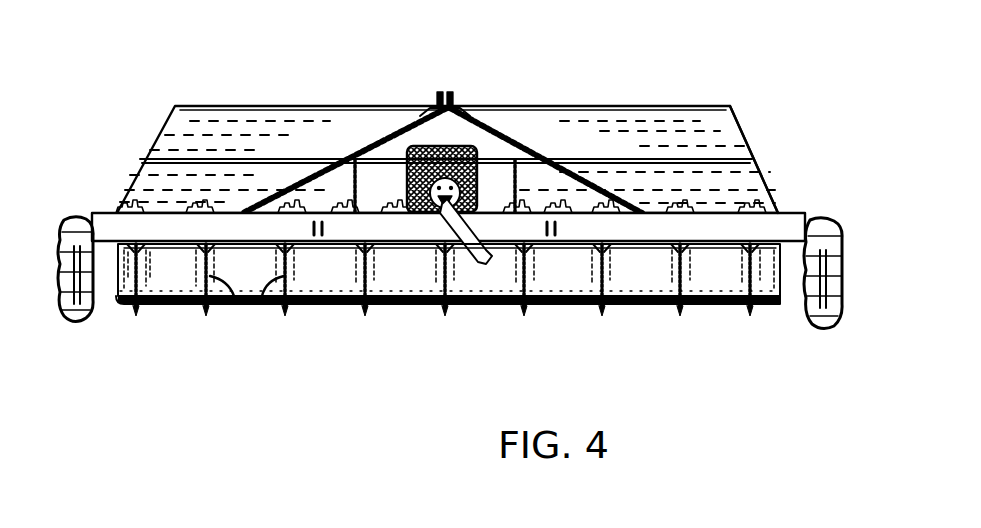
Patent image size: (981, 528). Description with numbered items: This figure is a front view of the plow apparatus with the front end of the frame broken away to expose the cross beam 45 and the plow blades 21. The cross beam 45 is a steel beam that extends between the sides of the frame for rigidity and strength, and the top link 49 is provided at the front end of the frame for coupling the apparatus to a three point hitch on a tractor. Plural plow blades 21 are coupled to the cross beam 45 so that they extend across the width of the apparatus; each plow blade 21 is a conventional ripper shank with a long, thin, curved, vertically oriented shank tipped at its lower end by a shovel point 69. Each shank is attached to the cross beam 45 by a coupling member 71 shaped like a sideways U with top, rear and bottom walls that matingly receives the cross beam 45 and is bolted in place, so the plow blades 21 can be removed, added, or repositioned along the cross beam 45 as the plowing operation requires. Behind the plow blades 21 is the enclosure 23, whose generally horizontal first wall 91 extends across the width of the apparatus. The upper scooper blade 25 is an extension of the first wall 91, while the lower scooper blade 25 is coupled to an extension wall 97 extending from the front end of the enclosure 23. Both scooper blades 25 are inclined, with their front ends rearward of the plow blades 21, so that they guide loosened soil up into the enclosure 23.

The enclosure 23 is at (283, 106).
The top link 49 is at (450, 100).
The cross beam 45 is at (125, 225).
The coupling member 71 is at (770, 203).
The plow blade 21 is at (262, 298).
The shovel point 69 is at (285, 307).
The first wall 91 is at (495, 278).
The extension wall 97 is at (558, 307).
The scooper blade 25 is at (632, 305).